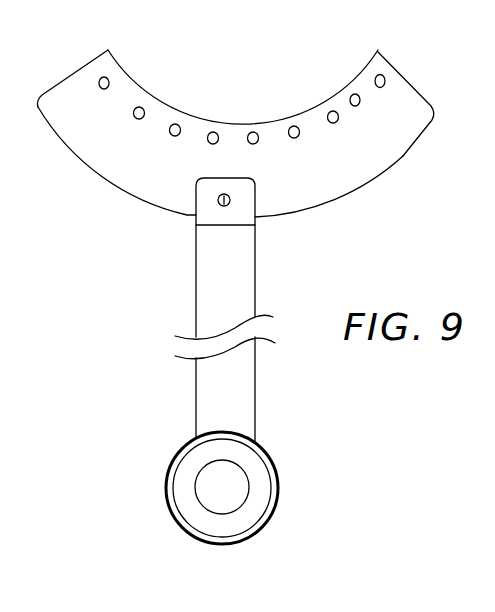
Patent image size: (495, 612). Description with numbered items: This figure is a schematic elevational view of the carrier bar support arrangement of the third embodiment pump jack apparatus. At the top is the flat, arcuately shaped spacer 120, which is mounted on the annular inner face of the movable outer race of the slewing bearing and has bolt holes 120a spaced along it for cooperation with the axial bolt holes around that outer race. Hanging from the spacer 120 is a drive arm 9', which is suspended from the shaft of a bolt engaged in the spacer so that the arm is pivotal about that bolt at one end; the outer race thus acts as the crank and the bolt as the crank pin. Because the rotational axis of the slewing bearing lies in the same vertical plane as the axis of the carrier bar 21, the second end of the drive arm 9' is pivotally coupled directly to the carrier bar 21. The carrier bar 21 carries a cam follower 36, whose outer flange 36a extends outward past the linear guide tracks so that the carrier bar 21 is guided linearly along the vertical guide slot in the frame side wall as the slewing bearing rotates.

The spacer 120 is at (385, 153).
The bolt holes 120a is at (328, 112).
The drive arm 9' is at (200, 310).
The carrier bar 21 is at (237, 491).
The cam follower 36 is at (257, 498).
The outer flange 36a is at (260, 522).